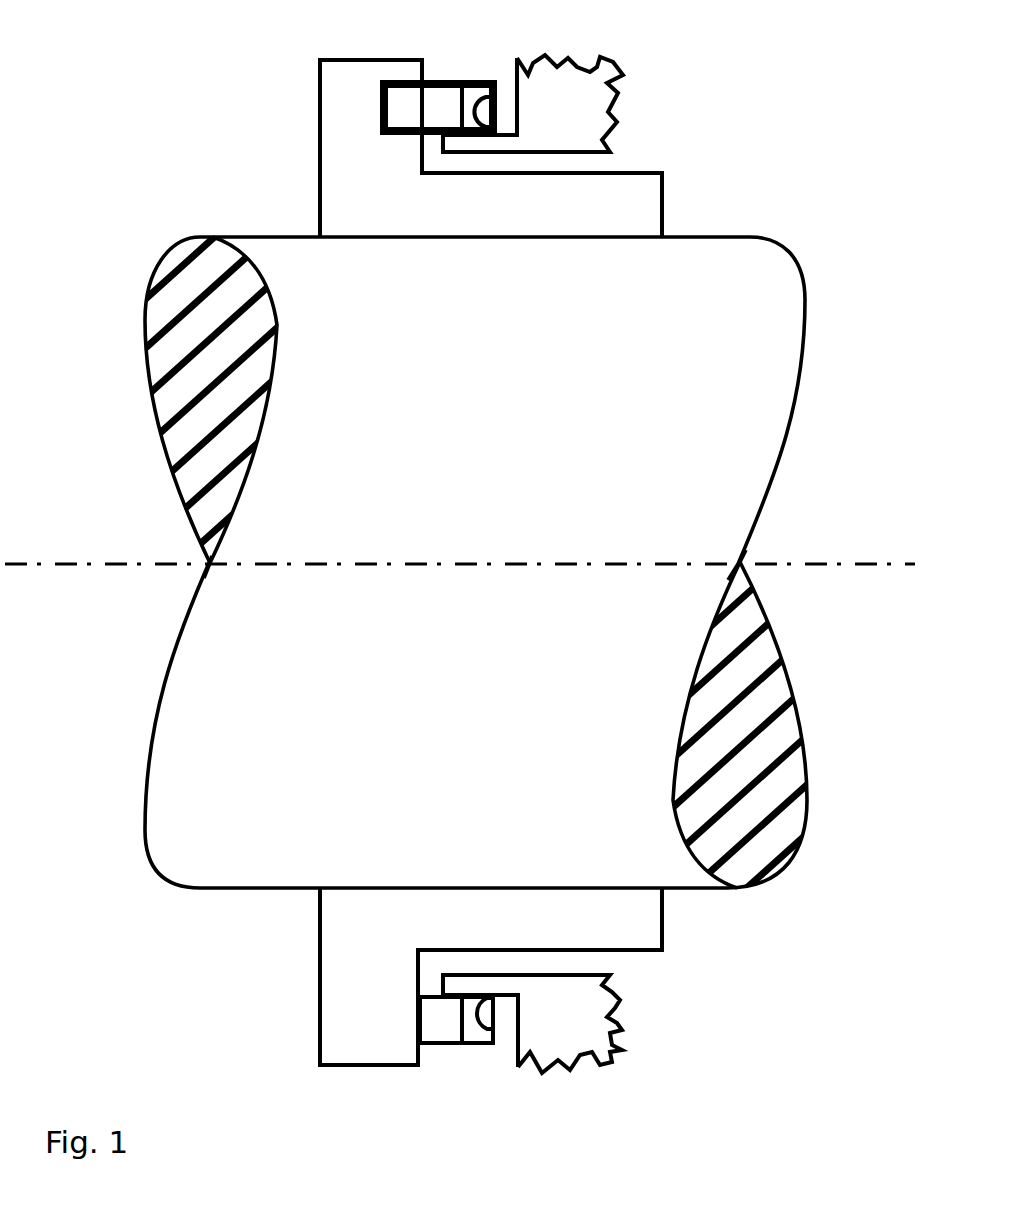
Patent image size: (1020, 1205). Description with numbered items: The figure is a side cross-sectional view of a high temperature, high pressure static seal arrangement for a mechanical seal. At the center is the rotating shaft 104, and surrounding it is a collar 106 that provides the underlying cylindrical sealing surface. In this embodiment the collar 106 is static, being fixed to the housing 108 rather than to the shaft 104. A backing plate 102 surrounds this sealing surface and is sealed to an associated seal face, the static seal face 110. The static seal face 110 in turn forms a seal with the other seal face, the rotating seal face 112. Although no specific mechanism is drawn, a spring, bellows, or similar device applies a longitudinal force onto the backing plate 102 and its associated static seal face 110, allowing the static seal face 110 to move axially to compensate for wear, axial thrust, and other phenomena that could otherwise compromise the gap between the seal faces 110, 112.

The backing plate 102 is at (473, 80).
The rotating shaft 104 is at (433, 443).
The collar 106 is at (480, 143).
The housing 108 is at (556, 109).
The static seal face 110 is at (443, 80).
The rotating seal face 112 is at (400, 108).